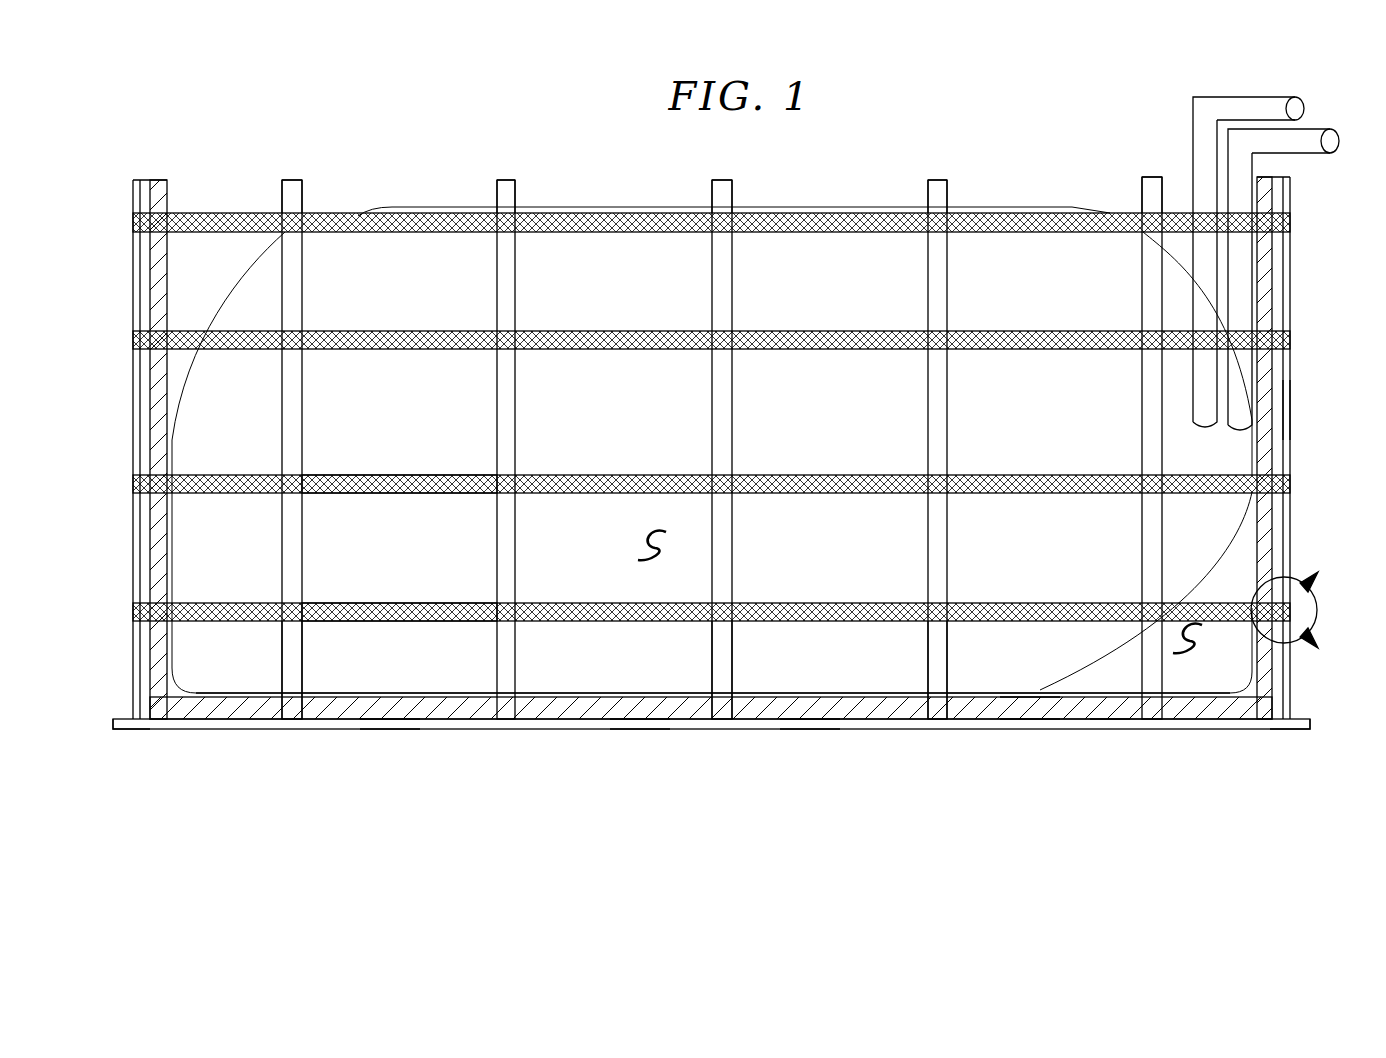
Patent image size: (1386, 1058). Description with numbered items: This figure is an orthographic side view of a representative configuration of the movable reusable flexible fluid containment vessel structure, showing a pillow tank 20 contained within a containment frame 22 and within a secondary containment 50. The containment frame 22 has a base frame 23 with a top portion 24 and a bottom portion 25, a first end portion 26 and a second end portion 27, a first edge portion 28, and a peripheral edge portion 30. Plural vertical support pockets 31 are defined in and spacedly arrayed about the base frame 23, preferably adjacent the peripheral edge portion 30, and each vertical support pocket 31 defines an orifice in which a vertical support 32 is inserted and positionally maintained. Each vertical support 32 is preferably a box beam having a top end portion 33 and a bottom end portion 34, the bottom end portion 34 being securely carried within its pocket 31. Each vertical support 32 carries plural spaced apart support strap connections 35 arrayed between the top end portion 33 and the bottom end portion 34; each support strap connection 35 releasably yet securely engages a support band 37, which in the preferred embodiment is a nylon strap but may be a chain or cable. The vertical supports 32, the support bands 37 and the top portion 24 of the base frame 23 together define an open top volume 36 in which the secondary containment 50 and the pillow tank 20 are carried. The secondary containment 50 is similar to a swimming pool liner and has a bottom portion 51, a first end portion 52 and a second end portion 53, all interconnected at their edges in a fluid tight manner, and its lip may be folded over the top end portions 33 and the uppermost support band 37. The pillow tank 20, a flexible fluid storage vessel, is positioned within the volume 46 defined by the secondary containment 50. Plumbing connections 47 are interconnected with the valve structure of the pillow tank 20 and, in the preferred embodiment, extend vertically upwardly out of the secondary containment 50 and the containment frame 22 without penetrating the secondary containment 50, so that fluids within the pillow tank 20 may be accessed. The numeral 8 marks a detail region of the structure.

The section view indicator 8 is at (1291, 610).
The pillow tank 20 is at (196, 382).
The containment frame 22 is at (888, 176).
The base frame 23 is at (195, 727).
The top portion 24 is at (840, 716).
The bottom portion 25 is at (385, 730).
The first end portion 26 is at (118, 724).
The second end portion 27 is at (1305, 730).
The first edge portion 28 is at (645, 722).
The peripheral edge portion 30 is at (1110, 721).
The vertical support pocket 31 is at (292, 720).
The vertical support 32 is at (148, 258).
The top end portion 33 is at (300, 186).
The bottom end portion 34 is at (510, 678).
The support strap connection 35 is at (514, 474).
The volume 36 is at (642, 536).
The support band 37 is at (380, 474).
The volume 46 is at (1196, 645).
The plumbing connections 47 is at (1200, 150).
The secondary containment 50 is at (1290, 410).
The bottom portion 51 is at (1030, 706).
The first end portion 52 is at (162, 421).
The second end portion 53 is at (1262, 290).